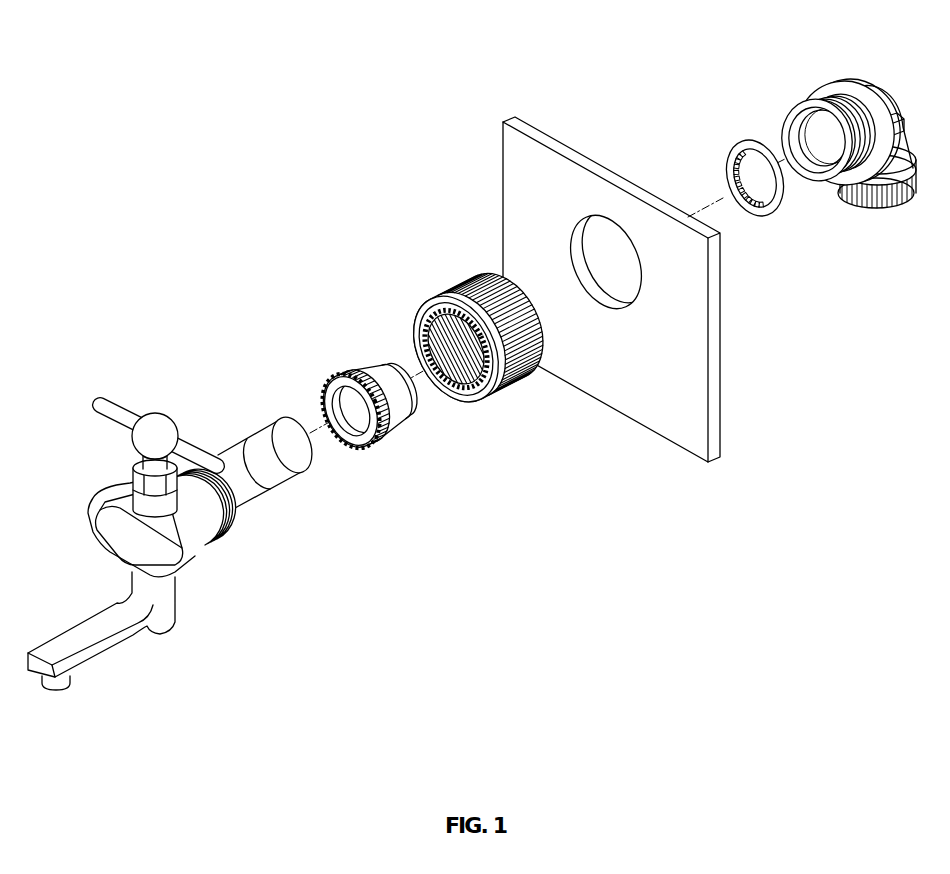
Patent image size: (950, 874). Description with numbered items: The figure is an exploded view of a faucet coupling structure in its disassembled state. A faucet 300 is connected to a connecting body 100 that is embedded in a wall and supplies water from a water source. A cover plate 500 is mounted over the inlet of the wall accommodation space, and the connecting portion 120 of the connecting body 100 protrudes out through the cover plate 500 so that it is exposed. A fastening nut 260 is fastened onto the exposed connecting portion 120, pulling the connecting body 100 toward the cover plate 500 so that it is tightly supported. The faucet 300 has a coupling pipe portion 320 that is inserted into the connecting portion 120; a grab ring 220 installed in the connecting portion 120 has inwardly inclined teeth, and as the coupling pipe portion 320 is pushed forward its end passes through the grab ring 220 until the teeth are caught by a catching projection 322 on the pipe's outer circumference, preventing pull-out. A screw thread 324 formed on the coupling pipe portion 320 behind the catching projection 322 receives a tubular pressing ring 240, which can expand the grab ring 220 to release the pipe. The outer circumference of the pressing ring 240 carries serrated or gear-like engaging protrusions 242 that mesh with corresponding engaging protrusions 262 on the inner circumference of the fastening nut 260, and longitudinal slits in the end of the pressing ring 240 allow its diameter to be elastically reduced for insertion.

The connecting body 100 is at (812, 114).
The connecting portion 120 is at (790, 127).
The grab ring 220 is at (777, 213).
The cover plate 500 is at (518, 195).
The fastening nut 260 is at (453, 344).
The engaging protrusion 262 is at (417, 330).
The pressing ring 240 is at (352, 387).
The engaging protrusion 242 is at (333, 373).
The coupling pipe portion 320 is at (273, 475).
The catching projection 322 is at (253, 448).
The screw thread 324 is at (220, 520).
The faucet 300 is at (164, 547).